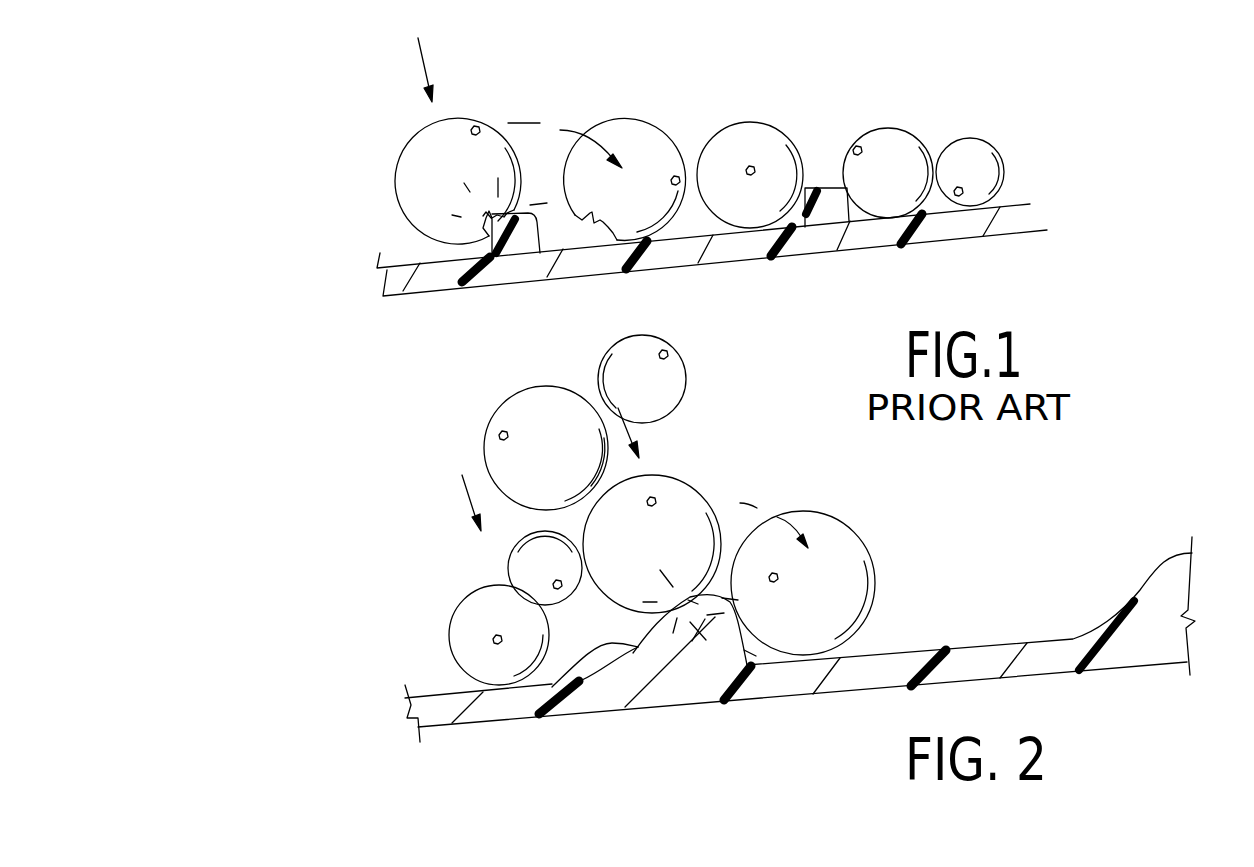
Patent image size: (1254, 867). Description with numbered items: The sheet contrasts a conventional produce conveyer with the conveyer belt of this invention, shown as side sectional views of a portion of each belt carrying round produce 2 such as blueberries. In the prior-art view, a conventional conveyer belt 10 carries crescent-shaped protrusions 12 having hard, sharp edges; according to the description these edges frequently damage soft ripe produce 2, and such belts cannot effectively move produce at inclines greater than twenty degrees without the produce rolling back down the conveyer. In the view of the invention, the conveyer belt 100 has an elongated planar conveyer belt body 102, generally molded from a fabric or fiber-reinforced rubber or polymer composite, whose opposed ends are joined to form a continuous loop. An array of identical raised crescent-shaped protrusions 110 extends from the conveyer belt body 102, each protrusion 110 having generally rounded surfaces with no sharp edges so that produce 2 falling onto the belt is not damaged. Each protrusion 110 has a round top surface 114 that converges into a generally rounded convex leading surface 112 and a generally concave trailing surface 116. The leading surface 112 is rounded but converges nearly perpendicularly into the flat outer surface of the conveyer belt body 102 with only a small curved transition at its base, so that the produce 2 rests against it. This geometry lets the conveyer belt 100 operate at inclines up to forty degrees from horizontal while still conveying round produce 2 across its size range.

In FIG. 1, the article (ball/fruit) 2 is at (457, 128).
In FIG. 2, the article (ball/fruit) 2 is at (672, 490).
In FIG. 1, the prior art conveyor tray 10 is at (794, 258).
In FIG. 1, the prior art ridge 12 is at (521, 245).
In FIG. 2, the conveyer belt 100 is at (1152, 488).
In FIG. 2, the conveyer belt body 102 is at (698, 687).
In FIG. 2, the protrusion 110 is at (731, 586).
In FIG. 2, the leading surface 112 is at (748, 653).
In FIG. 2, the top surface 114 is at (693, 597).
In FIG. 2, the trailing surface 116 is at (552, 687).